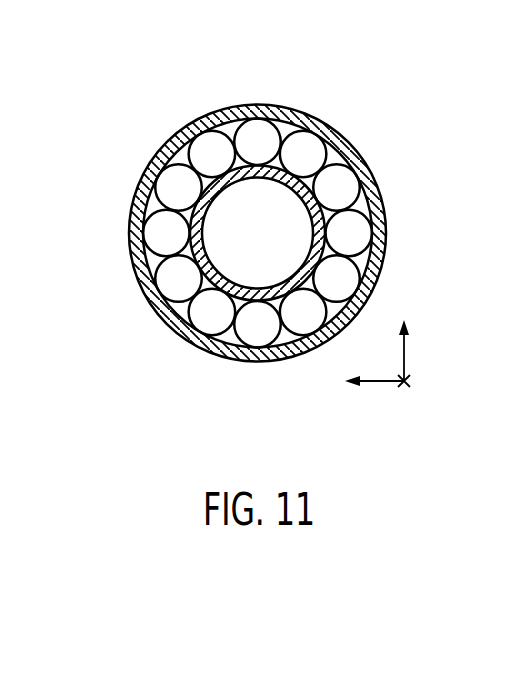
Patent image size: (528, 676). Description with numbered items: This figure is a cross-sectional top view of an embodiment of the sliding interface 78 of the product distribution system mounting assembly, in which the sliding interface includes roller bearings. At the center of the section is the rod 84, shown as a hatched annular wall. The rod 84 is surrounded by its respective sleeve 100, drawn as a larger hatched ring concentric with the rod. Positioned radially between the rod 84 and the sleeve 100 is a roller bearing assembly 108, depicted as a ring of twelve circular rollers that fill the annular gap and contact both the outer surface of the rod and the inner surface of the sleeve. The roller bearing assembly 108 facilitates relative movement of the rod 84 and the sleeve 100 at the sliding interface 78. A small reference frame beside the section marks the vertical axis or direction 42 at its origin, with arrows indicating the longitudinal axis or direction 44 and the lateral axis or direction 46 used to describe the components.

The sliding interface 78 is at (257, 252).
The sleeve 100 is at (318, 124).
The roller bearing assembly 108 is at (212, 153).
The rod 84 is at (222, 194).
The vertical axis or direction 42 is at (407, 391).
The longitudinal axis or direction 44 is at (380, 383).
The lateral axis or direction 46 is at (407, 357).